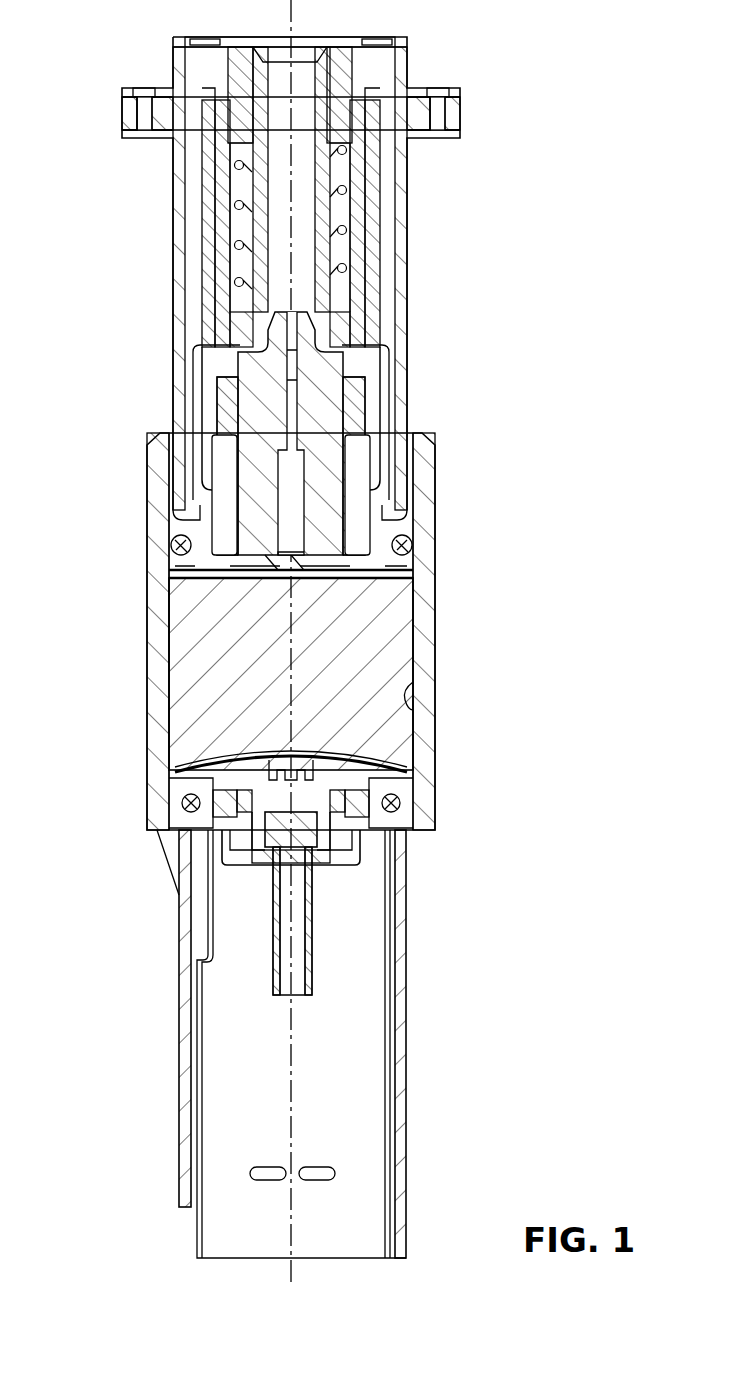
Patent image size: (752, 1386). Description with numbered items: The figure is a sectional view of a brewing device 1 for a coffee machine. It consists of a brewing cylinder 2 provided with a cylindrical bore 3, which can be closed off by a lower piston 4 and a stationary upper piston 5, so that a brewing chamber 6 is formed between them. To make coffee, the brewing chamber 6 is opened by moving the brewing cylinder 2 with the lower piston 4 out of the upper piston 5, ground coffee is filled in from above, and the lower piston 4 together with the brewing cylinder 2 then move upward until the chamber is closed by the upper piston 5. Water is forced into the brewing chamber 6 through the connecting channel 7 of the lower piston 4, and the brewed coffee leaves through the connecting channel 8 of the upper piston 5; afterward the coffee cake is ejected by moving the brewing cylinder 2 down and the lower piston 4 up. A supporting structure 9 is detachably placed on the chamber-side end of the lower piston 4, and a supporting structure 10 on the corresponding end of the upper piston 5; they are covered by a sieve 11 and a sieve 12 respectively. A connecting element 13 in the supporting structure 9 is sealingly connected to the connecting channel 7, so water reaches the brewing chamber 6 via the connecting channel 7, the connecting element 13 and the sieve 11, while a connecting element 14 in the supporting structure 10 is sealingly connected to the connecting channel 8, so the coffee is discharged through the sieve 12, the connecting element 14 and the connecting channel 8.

The brewing device 1 is at (495, 327).
The brewing cylinder 2 is at (427, 622).
The cylindrical bore 3 is at (418, 702).
The lower piston 4 is at (398, 993).
The upper piston 5 is at (400, 230).
The brewing chamber 6 is at (195, 677).
The connecting channel 7 is at (273, 957).
The connecting channel 8 is at (280, 218).
The supporting structure 9 is at (400, 792).
The supporting structure 10 is at (317, 447).
The sieve 11 is at (232, 757).
The sieve 12 is at (232, 587).
The connecting element 13 is at (173, 793).
The connecting element 14 is at (305, 355).